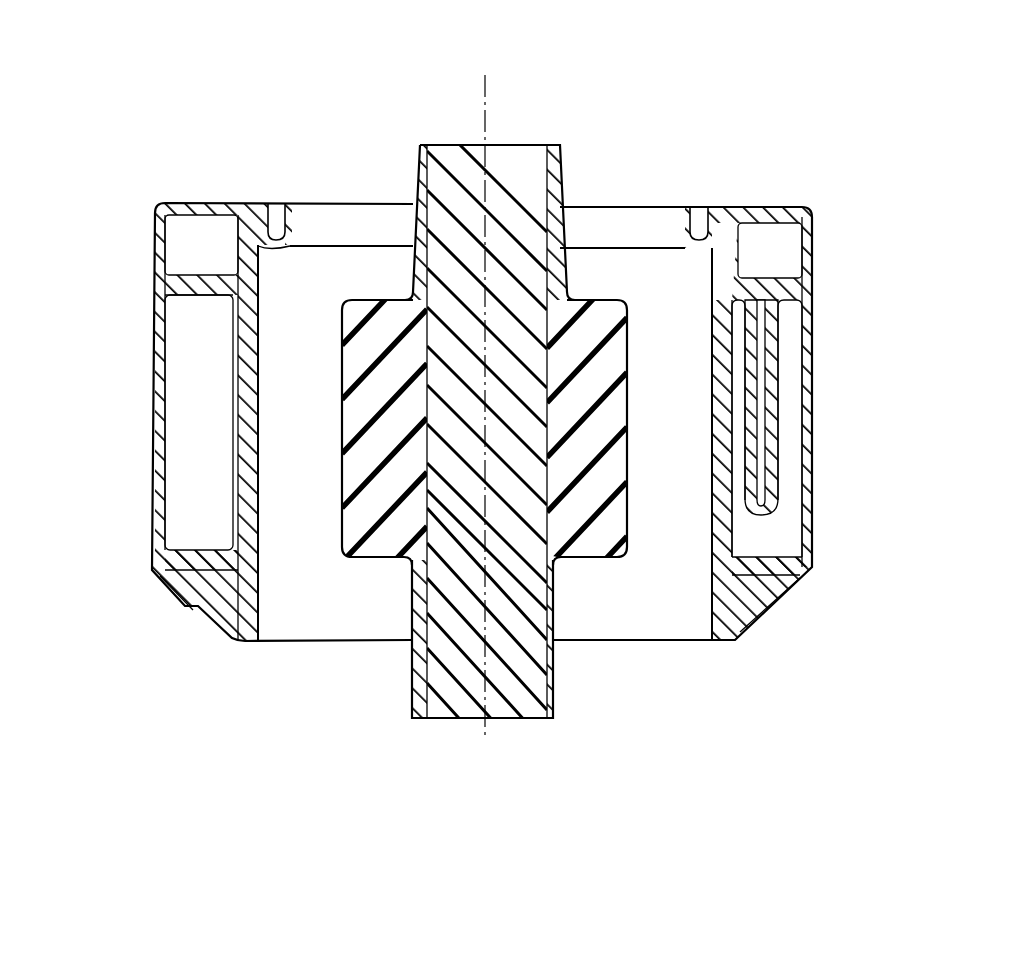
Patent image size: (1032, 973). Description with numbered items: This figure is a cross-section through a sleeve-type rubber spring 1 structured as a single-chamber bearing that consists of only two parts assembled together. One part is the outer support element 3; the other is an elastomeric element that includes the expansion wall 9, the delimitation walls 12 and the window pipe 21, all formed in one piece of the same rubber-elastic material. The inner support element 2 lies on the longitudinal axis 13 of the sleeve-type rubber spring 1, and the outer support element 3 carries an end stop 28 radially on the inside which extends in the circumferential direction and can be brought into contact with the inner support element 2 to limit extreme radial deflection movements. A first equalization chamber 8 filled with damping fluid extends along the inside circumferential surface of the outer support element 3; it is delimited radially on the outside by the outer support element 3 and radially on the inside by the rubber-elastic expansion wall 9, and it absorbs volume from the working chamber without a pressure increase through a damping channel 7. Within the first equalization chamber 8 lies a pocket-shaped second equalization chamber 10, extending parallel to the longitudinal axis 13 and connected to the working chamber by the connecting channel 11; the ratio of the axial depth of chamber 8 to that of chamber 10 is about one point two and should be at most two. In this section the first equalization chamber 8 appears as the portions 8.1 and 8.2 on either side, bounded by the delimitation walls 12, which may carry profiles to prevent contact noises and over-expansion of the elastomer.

The sleeve-type rubber spring 1 is at (796, 678).
The inner support element 2 is at (515, 172).
The outer support element 3 is at (817, 228).
The damping channel 7 is at (202, 233).
The first equalization chamber 8 is at (190, 480).
The first chamber 8.1 is at (190, 365).
The second chamber 8.2 is at (765, 545).
The expansion wall 9 is at (713, 330).
The second equalization chamber 10 is at (757, 427).
The connecting channel 11 is at (757, 245).
The delimitation walls 12 is at (747, 373).
The longitudinal axis 13 is at (485, 145).
The window pipe 21 is at (808, 570).
The end stop 28 is at (690, 210).